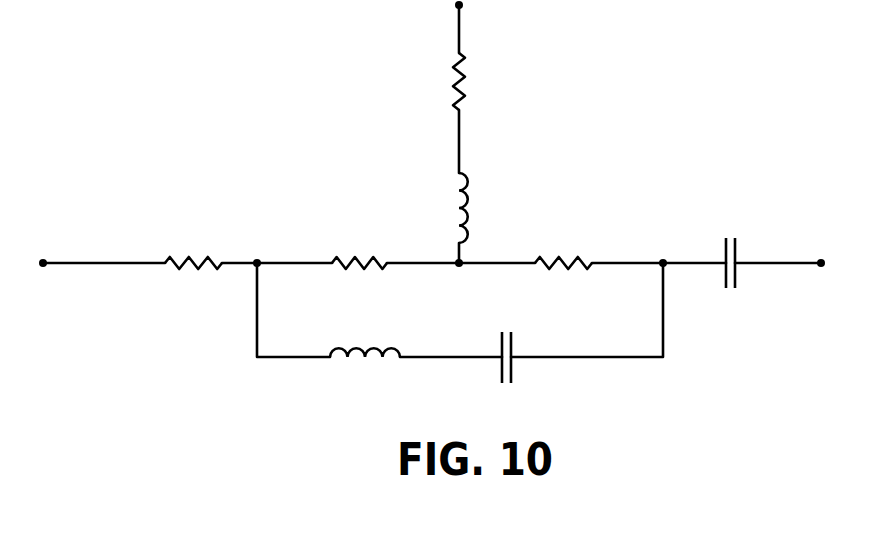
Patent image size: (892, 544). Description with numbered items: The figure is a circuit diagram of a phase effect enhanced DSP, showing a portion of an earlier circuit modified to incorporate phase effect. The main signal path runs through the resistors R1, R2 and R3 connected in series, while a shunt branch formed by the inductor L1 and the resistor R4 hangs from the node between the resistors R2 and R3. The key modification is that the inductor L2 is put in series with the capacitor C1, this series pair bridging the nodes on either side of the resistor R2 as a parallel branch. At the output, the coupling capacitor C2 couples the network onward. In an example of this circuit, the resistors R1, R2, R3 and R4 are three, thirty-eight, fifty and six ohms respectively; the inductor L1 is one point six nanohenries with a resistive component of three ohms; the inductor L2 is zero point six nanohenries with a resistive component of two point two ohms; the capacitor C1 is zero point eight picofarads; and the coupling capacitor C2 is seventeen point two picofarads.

The resistor R1 is at (193, 245).
The resistor R2 is at (359, 245).
The resistor R3 is at (563, 245).
The resistor R4 is at (432, 81).
The inductor L1 is at (433, 208).
The inductor L2 is at (365, 370).
The capacitor C1 is at (505, 376).
The coupling capacitor C2 is at (730, 280).